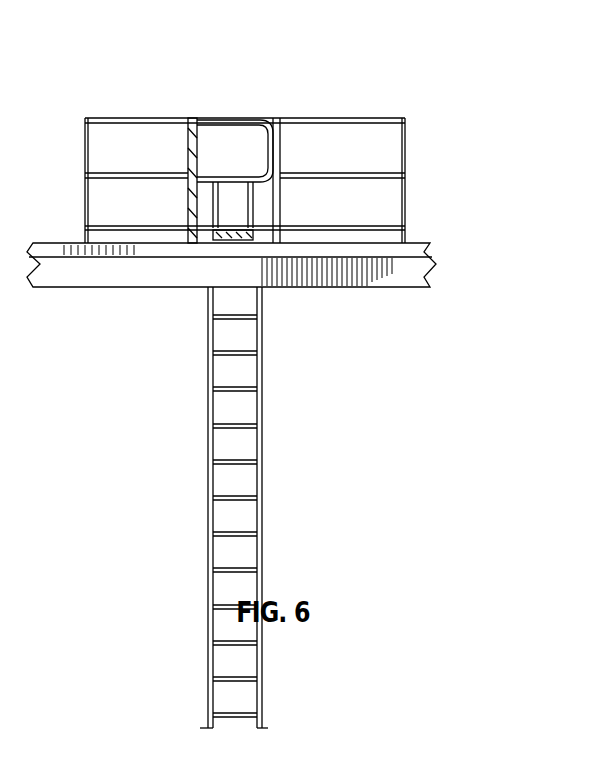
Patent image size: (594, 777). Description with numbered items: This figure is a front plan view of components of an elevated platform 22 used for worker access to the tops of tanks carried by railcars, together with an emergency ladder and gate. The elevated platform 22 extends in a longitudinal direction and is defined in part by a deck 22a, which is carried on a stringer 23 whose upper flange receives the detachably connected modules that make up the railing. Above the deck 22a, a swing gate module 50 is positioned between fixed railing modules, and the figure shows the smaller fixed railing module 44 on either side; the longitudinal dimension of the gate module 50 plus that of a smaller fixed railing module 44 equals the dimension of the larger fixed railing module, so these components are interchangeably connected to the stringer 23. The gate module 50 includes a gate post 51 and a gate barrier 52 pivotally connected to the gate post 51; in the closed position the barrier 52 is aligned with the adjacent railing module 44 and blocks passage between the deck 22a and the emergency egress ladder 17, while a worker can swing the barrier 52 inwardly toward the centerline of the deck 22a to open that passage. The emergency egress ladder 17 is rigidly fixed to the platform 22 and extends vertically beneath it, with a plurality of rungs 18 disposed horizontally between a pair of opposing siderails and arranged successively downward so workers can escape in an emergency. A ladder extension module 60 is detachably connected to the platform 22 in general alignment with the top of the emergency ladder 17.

The emergency egress ladder 17 is at (260, 507).
The rungs 18 is at (228, 425).
The elevated platform 22 is at (281, 281).
The deck 22a is at (63, 243).
The stringer 23 is at (420, 267).
The smaller fixed railing module 44 is at (132, 100).
The swing gate module 50 is at (250, 122).
The gate post 51 is at (185, 141).
The gate barrier 52 is at (240, 120).
The ladder extension module 60 is at (296, 152).